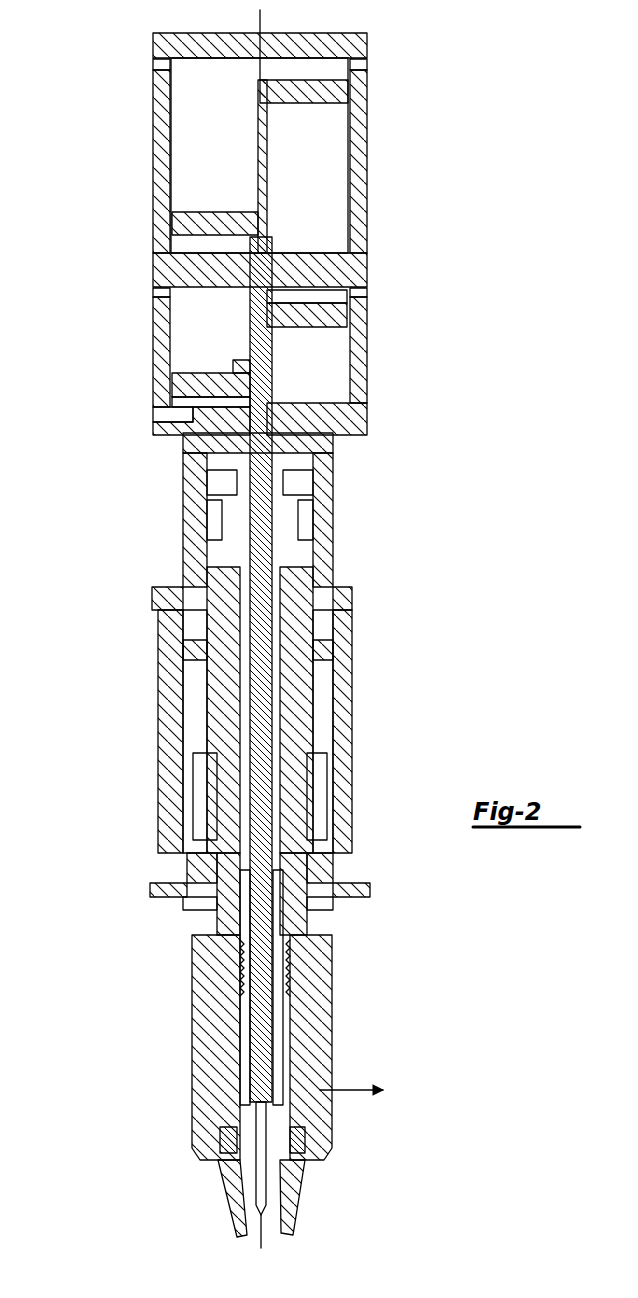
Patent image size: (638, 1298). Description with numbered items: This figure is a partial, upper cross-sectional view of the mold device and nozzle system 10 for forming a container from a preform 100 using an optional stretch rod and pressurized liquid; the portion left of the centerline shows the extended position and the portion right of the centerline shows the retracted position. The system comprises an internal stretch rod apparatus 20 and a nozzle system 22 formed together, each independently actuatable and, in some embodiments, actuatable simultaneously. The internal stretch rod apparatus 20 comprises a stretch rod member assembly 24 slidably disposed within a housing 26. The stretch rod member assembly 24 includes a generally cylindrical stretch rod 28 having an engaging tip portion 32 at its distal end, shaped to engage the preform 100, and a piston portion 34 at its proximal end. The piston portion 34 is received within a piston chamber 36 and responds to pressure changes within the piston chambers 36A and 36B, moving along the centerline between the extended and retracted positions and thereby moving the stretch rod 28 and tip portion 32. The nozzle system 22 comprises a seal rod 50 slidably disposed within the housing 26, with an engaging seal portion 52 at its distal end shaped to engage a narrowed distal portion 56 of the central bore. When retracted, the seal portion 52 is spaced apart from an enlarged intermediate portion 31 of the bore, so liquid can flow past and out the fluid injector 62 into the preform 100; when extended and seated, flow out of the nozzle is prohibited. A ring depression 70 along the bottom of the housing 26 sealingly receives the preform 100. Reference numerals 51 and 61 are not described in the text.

The mold device and nozzle system 10 is at (380, 603).
The internal stretch rod apparatus 20 is at (385, 192).
The nozzle system 22 is at (125, 412).
The stretch rod member assembly 24 is at (270, 712).
The housing 26 is at (350, 748).
The stretch rod 28 is at (215, 918).
The enlarged intermediate portion 31 is at (233, 1067).
The engaging tip portion 32 is at (262, 1218).
The piston portion 34 is at (320, 103).
The piston chamber 36 is at (183, 92).
The piston chamber 36A is at (229, 139).
The piston chamber 36B is at (329, 180).
The seal rod 50 is at (243, 820).
The bore 51 is at (270, 972).
The engaging seal portion 52 is at (240, 1103).
The narrowed distal portion 56 is at (277, 1147).
The outlet passage 61 is at (318, 1098).
The fluid injector 62 is at (250, 1186).
The ring depression 70 is at (303, 1128).
The preform 100 is at (297, 1190).